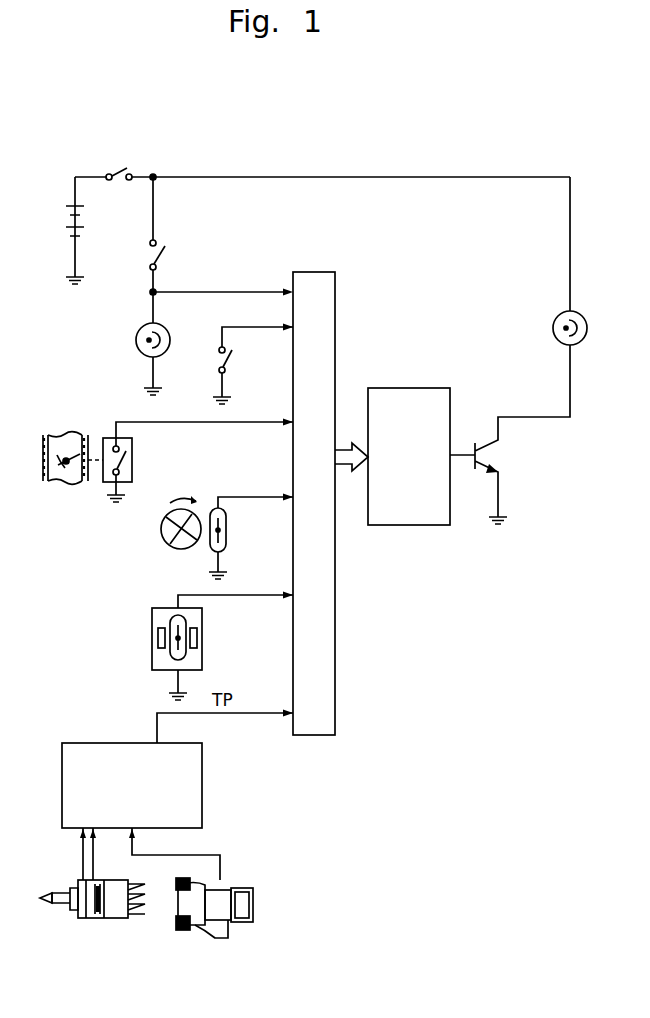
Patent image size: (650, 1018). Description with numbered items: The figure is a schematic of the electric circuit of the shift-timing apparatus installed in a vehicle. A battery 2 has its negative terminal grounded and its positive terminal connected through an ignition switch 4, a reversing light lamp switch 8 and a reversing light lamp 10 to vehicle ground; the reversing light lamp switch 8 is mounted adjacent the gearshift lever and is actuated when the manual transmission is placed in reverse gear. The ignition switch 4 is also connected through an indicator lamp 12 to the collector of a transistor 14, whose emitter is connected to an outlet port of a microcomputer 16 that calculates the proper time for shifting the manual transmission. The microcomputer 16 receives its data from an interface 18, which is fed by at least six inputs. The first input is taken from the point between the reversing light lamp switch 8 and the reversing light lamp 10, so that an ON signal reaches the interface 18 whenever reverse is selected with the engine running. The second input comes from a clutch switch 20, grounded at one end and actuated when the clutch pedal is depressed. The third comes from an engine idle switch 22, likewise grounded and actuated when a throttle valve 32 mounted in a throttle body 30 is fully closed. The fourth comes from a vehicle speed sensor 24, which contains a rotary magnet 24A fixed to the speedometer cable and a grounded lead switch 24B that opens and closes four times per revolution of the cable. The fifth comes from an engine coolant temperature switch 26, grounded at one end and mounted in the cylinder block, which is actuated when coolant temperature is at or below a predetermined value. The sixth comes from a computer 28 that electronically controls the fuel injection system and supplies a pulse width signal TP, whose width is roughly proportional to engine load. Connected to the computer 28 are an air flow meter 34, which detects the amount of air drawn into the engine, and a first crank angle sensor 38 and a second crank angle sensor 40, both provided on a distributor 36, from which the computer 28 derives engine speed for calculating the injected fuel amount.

The battery 2 is at (84, 212).
The ignition switch 4 is at (117, 172).
The reversing light lamp switch 8 is at (166, 252).
The reversing light lamp 10 is at (165, 333).
The indicator lamp 12 is at (586, 321).
The transistor 14 is at (487, 440).
The microcomputer 16 is at (417, 525).
The interface 18 is at (338, 660).
The clutch switch 20 is at (228, 360).
The engine idle switch 22 is at (132, 462).
The vehicle speed sensor 24 is at (206, 498).
The rotary magnet 24A is at (163, 547).
The lead switch 24B is at (226, 527).
The engine coolant temperature switch 26 is at (202, 636).
The computer 28 is at (202, 800).
The throttle body 30 is at (45, 435).
The throttle valve 32 is at (64, 470).
The air flow meter 34 is at (224, 880).
The distributor 36 is at (126, 884).
The first crank angle sensor 38 is at (95, 880).
The second crank angle sensor 40 is at (83, 876).